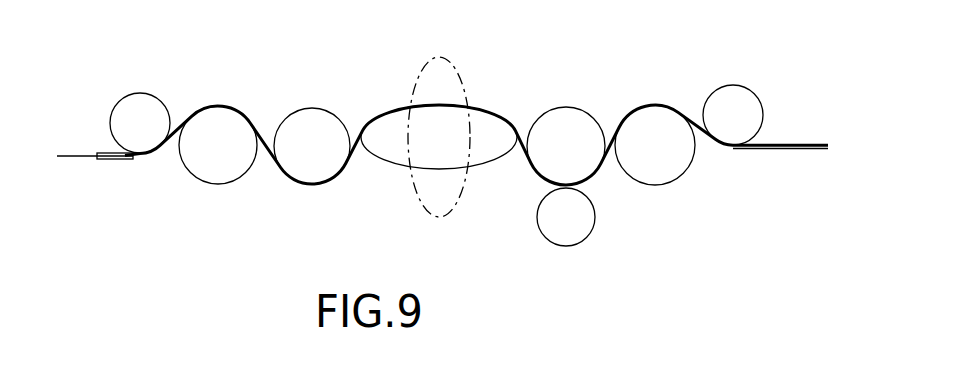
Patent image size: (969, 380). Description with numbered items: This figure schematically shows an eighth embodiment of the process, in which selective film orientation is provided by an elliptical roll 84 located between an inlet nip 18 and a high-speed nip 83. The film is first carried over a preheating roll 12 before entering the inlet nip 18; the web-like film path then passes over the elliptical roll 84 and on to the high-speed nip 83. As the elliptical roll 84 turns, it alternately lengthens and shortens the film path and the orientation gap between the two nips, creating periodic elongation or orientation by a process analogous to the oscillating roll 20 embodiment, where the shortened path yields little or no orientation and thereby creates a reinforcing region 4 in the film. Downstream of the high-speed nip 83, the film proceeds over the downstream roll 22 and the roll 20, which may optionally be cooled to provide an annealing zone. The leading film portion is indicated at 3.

The web 3 is at (70, 153).
The region 4 is at (108, 160).
The downstream roll 22 is at (137, 102).
The oscillating roll 20 is at (195, 165).
The high-speed nip 83 is at (307, 113).
The elliptical roll 84 is at (388, 112).
The inlet nip 18 is at (577, 118).
The preheating roll 12 is at (653, 175).